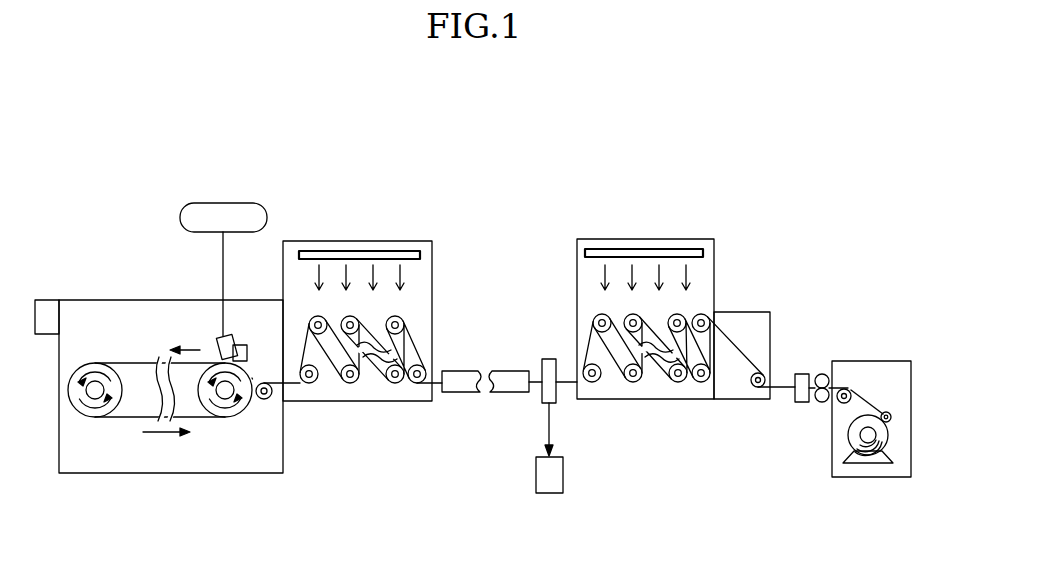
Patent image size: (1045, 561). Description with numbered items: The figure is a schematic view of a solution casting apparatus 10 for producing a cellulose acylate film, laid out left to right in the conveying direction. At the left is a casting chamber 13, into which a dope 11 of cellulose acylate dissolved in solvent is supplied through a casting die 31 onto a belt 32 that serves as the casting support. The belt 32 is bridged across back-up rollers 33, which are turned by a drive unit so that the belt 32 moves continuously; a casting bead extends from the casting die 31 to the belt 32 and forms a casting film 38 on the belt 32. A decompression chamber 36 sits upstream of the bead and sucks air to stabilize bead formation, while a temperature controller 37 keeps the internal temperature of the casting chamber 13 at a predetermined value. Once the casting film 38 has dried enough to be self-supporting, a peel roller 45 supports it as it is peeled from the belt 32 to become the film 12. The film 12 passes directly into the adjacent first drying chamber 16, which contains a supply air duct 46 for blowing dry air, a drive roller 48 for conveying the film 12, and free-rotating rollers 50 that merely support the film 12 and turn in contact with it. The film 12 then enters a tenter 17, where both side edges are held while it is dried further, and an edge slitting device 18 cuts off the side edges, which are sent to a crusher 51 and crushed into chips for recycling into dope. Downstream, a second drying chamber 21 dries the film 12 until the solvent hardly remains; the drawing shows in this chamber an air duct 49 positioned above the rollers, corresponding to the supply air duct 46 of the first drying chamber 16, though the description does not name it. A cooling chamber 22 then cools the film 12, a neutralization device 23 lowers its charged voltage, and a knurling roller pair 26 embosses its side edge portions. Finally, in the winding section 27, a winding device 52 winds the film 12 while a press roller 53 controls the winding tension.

The solution casting apparatus 10 is at (521, 127).
The dope 11 is at (180, 219).
The film 12 is at (293, 387).
The casting chamber 13 is at (122, 475).
The first drying chamber 16 is at (363, 232).
The tenter 17 is at (504, 368).
The edge slitting device 18 is at (548, 371).
The second drying chamber 21 is at (644, 231).
The cooling chamber 22 is at (751, 312).
The neutralization device 23 is at (800, 373).
The knurling roller pair 26 is at (822, 374).
The winding section 27 is at (873, 360).
The casting die 31 is at (228, 334).
The belt 32 is at (250, 377).
The back-up rollers 33 is at (114, 418).
The decompression chamber 36 is at (242, 345).
The temperature controller 37 is at (38, 340).
The casting film 38 is at (137, 363).
The peel roller 45 is at (262, 400).
The supply air duct 46 is at (412, 250).
The drive roller 48 is at (311, 384).
The air duct 49 is at (700, 249).
The free-rotating rollers 50 is at (403, 318).
The crusher 51 is at (536, 472).
The winding device 52 is at (840, 446).
The press roller 53 is at (886, 411).